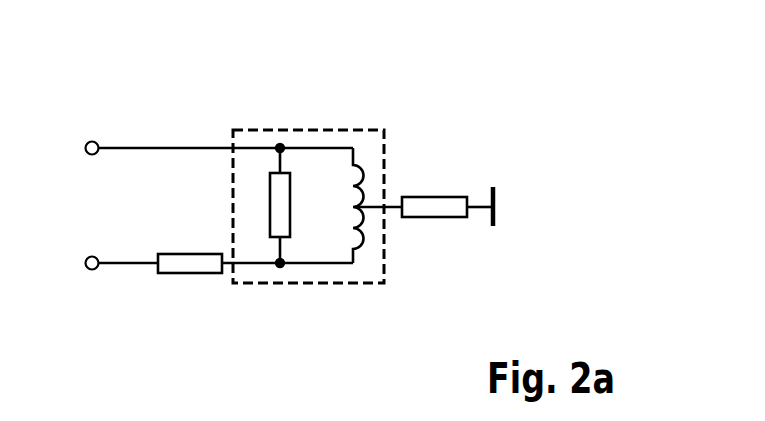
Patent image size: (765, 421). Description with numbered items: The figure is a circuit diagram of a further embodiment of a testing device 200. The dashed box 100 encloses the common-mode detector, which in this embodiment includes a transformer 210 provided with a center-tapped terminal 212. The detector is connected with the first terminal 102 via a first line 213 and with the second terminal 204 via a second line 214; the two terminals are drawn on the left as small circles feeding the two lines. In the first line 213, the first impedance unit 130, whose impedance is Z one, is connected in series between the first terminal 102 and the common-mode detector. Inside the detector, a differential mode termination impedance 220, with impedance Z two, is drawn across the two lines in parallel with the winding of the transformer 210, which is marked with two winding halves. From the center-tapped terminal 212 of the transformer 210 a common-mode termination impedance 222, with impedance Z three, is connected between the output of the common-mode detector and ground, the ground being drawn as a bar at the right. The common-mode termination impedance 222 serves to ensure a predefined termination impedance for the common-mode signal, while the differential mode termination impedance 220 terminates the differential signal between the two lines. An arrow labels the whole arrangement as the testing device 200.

The impedance matching / transformer unit (dashed box) 100 is at (340, 283).
The first terminal 102 is at (89, 270).
The first impedance unit 130 is at (197, 274).
The testing device 200 is at (387, 107).
The second terminal 204 is at (97, 142).
The transformer 210 is at (362, 172).
The center-tapped terminal 212 is at (363, 210).
The first line 213 is at (137, 265).
The second line 214 is at (173, 146).
The differential mode termination impedance 220 is at (272, 173).
The common-mode termination impedance 222 is at (442, 197).